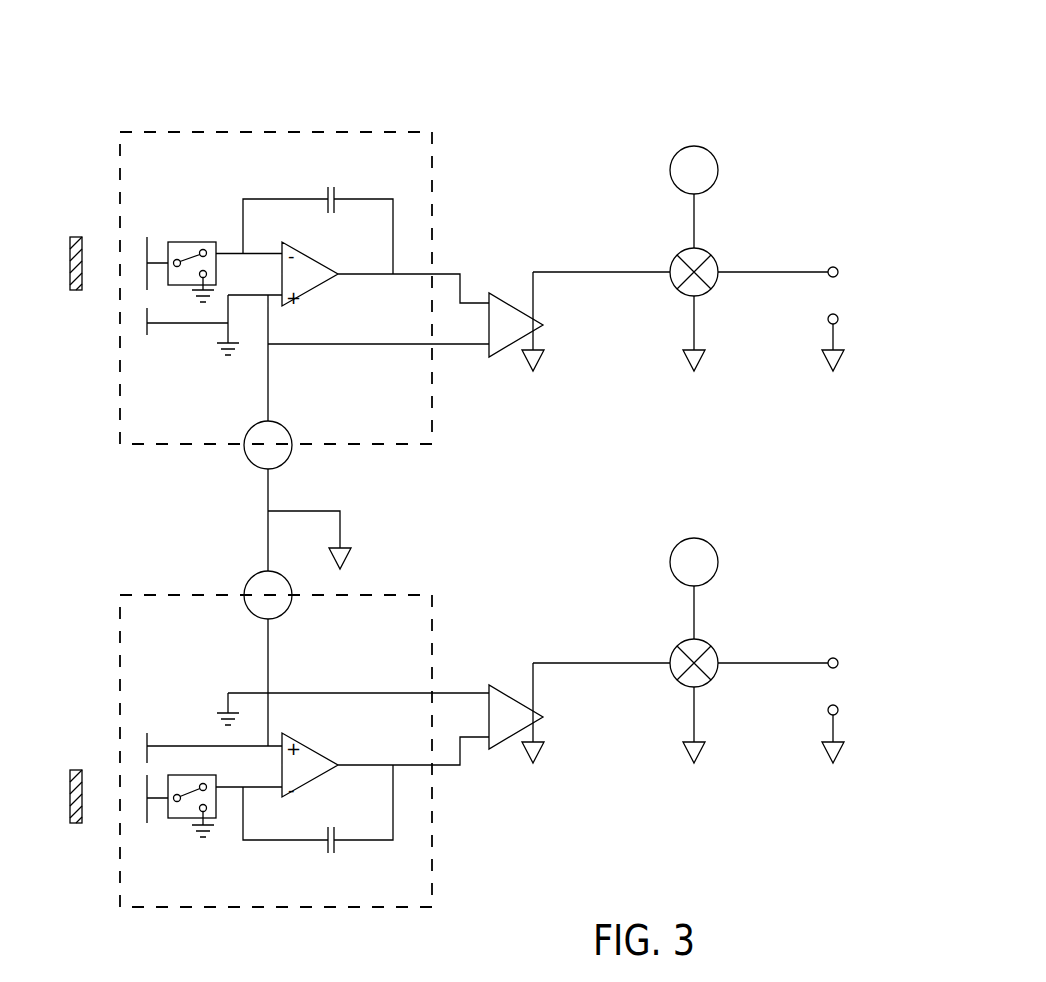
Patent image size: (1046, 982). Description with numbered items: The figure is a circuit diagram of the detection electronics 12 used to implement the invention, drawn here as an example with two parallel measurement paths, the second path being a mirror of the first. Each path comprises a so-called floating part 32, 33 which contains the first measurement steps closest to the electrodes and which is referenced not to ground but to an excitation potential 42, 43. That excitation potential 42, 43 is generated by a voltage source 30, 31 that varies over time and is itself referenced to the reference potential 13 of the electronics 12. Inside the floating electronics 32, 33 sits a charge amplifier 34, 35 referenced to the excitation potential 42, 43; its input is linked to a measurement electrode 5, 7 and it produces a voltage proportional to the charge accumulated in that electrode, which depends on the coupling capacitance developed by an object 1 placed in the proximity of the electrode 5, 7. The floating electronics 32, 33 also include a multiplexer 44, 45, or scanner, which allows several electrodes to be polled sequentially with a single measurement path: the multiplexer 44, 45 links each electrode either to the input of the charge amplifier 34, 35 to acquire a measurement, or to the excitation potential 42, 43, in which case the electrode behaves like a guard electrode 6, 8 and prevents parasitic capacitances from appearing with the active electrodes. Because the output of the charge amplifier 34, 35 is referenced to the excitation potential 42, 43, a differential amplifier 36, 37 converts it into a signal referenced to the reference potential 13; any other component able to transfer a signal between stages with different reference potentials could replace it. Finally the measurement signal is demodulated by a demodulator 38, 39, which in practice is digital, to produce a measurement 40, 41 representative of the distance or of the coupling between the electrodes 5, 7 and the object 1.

The object 1 is at (71, 237).
The measurement electrode 5 is at (147, 242).
The guard electrode 6 is at (147, 330).
The measurement electrode 7 is at (147, 815).
The guard electrode 8 is at (147, 737).
The detection electronics 12 is at (282, 224).
The reference potential 13 is at (355, 553).
The voltage source 30 is at (287, 463).
The voltage source 31 is at (248, 578).
The floating part 32 is at (413, 132).
The floating part 33 is at (433, 595).
The charge amplifier 34 is at (296, 184).
The charge amplifier 35 is at (366, 864).
The differential amplifier 36 is at (511, 283).
The differential amplifier 37 is at (512, 676).
The demodulator 38 is at (710, 257).
The demodulator 39 is at (710, 647).
The measurement 40 is at (836, 268).
The measurement 41 is at (836, 658).
The excitation potential 42 is at (228, 358).
The excitation potential 43 is at (228, 693).
The multiplexer 44 is at (183, 242).
The multiplexer 45 is at (178, 818).